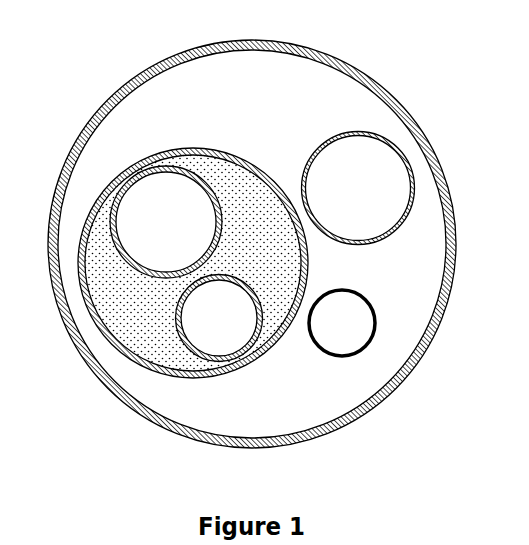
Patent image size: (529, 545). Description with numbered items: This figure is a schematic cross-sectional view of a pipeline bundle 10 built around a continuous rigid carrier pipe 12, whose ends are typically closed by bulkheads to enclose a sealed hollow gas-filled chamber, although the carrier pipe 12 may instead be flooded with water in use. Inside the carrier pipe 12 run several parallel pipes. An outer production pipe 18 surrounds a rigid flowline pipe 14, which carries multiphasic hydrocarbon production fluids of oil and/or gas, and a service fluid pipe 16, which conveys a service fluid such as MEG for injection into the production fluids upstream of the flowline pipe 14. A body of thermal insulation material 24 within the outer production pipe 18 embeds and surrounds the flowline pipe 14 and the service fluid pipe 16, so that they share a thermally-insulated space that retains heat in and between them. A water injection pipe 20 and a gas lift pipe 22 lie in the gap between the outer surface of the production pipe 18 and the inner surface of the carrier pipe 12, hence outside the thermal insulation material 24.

The pipeline bundle 10 is at (57, 63).
The carrier pipe 12 is at (380, 91).
The flowline pipe 14 is at (125, 250).
The service fluid pipe 16 is at (209, 354).
The outer production pipe 18 is at (189, 146).
The water injection pipe 20 is at (330, 138).
The gas lift pipe 22 is at (370, 310).
The thermal insulation material 24 is at (242, 178).